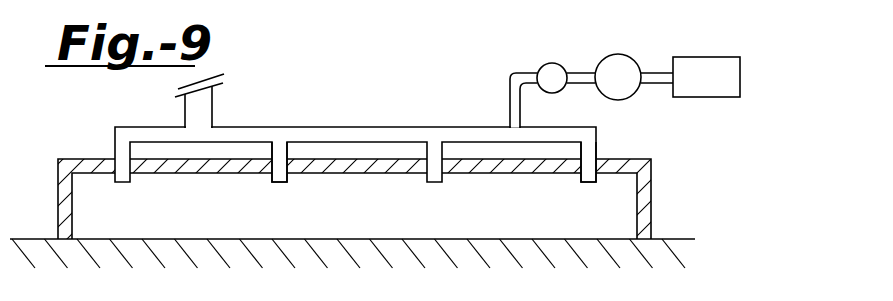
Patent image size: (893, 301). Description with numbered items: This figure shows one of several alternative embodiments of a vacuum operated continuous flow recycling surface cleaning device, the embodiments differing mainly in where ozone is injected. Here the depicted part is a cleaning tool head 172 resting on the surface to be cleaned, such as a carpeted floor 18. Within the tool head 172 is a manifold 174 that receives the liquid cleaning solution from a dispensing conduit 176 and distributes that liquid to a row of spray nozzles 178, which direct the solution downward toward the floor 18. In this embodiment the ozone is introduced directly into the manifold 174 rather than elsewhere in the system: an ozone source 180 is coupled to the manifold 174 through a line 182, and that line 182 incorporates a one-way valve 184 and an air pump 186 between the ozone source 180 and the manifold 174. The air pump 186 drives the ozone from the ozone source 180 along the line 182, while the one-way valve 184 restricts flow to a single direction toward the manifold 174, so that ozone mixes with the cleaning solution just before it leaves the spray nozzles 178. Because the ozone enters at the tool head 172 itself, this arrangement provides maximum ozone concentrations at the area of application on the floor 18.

The carpeted floor 18 is at (670, 238).
The cleaning tool head 172 is at (57, 202).
The manifold 174 is at (305, 127).
The dispensing conduit 176 is at (214, 100).
The spray nozzles 178 is at (274, 184).
The ozone source 180 is at (722, 57).
The line 182 is at (517, 73).
The one-way valve 184 is at (556, 63).
The air pump 186 is at (622, 100).